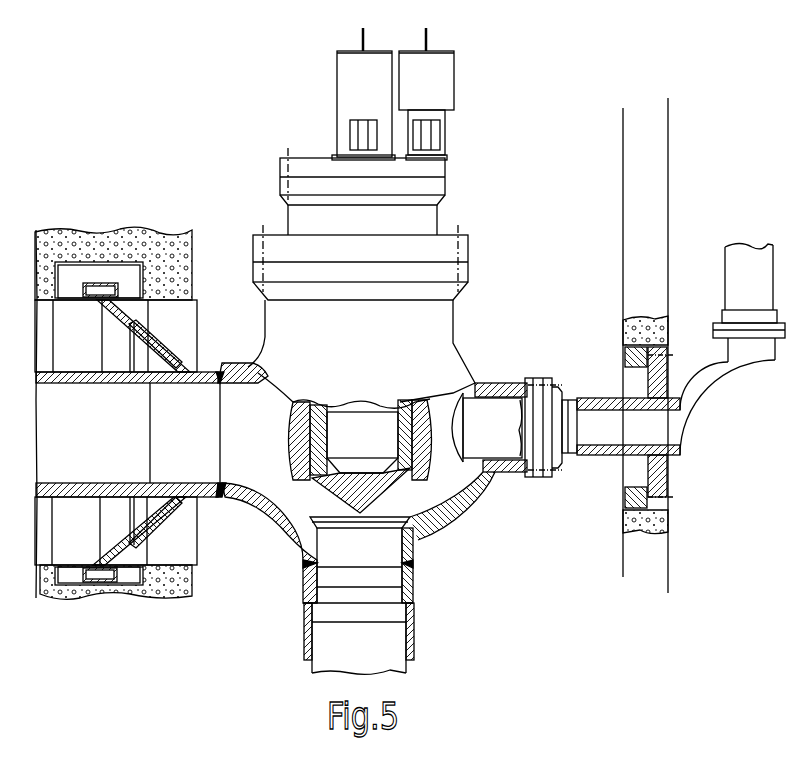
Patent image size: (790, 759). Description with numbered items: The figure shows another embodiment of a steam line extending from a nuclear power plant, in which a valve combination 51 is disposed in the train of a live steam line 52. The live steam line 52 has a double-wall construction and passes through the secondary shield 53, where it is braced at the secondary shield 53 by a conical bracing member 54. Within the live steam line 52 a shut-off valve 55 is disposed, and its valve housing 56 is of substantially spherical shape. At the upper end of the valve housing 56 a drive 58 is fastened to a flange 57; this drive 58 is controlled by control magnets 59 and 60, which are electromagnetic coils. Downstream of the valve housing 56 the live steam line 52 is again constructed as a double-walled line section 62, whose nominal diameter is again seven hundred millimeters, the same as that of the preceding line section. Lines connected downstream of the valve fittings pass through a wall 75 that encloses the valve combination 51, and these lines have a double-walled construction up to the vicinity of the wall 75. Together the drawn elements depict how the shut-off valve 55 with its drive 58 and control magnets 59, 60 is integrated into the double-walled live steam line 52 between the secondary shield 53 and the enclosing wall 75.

The valve combination 51 is at (478, 544).
The live steam line 52 is at (85, 388).
The secondary shield 53 is at (121, 240).
The conical bracing member 54 is at (172, 347).
The shut-off valve 55 is at (323, 478).
The valve housing 56 is at (250, 503).
The flange 57 is at (459, 273).
The drive 58 is at (442, 192).
The control magnet 59 is at (446, 91).
The control magnet 60 is at (350, 85).
The double-walled line section 62 is at (307, 667).
The wall 75 is at (658, 570).